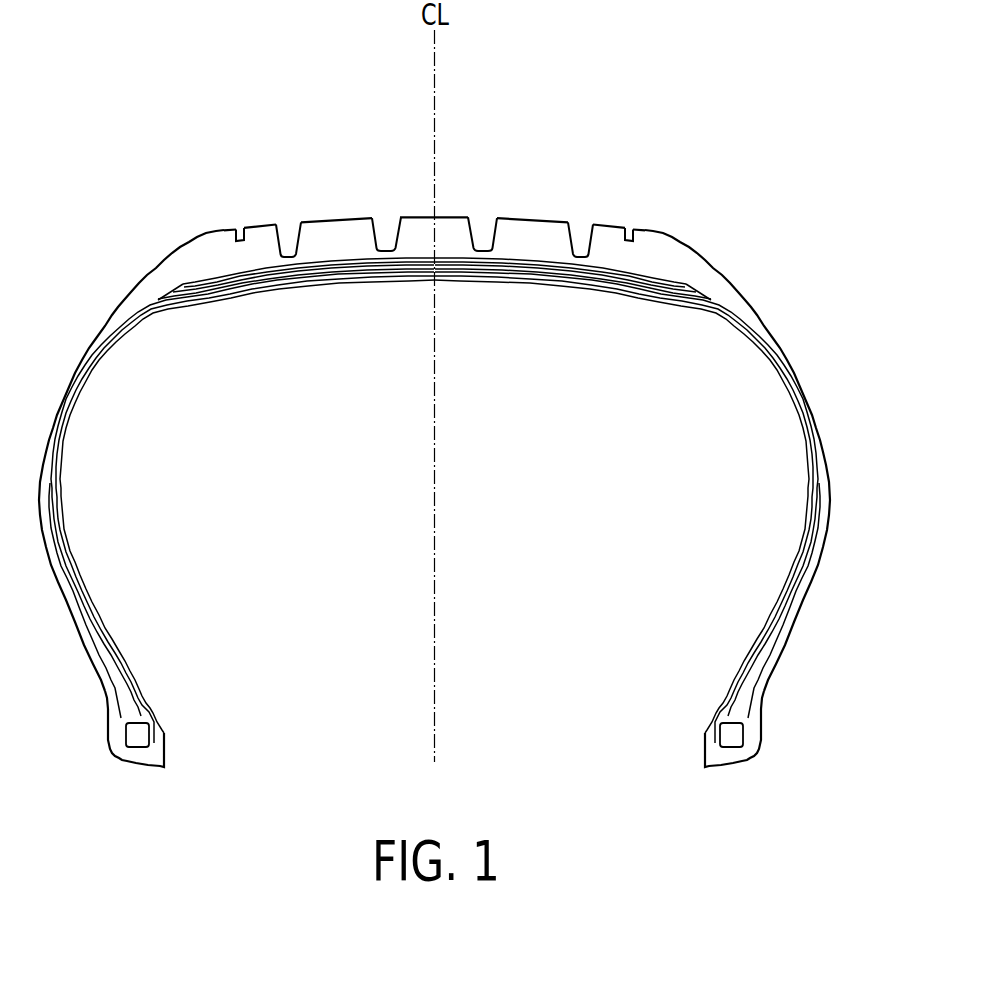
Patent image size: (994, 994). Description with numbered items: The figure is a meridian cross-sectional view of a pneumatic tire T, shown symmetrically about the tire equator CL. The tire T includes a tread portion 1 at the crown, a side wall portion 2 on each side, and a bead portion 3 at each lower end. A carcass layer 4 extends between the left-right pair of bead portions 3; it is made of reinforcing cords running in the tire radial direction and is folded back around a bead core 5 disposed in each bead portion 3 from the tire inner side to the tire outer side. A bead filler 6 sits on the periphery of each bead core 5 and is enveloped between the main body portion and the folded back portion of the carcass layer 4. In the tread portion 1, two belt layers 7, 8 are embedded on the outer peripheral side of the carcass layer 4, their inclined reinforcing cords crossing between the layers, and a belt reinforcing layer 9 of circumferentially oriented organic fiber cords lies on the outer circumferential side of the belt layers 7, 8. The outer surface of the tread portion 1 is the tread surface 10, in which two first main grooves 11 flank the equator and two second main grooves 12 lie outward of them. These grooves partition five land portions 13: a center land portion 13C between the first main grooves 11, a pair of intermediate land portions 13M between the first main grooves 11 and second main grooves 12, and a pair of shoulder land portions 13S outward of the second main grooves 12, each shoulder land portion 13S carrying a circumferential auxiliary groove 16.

The tread portion 1 is at (475, 409).
The tread surface 10 is at (420, 187).
The pneumatic tire T is at (726, 153).
The land portions 13 is at (208, 90).
The center land portion 13C is at (440, 213).
The intermediate land portion 13M is at (325, 216).
The shoulder land portion 13S is at (233, 226).
The first main groove 11 is at (387, 240).
The second main groove 12 is at (287, 240).
The auxiliary groove 16 is at (232, 232).
The side wall portion 2 is at (849, 462).
The bead portion 3 is at (782, 748).
The carcass layer 4 is at (543, 281).
The bead core 5 is at (730, 737).
The bead filler 6 is at (748, 677).
The belt layer 7 is at (608, 283).
The belt layer 8 is at (647, 288).
The belt reinforcing layer 9 is at (680, 293).